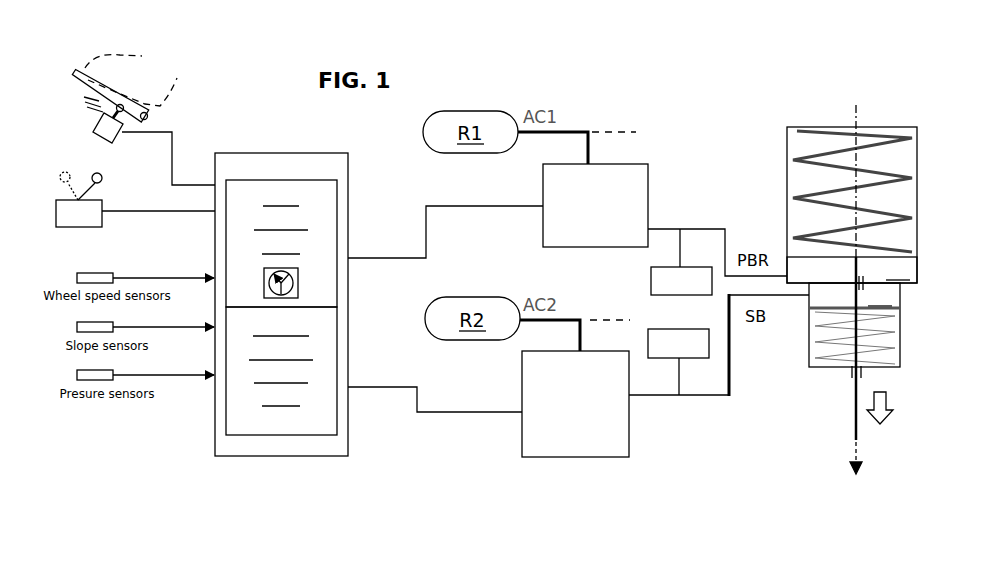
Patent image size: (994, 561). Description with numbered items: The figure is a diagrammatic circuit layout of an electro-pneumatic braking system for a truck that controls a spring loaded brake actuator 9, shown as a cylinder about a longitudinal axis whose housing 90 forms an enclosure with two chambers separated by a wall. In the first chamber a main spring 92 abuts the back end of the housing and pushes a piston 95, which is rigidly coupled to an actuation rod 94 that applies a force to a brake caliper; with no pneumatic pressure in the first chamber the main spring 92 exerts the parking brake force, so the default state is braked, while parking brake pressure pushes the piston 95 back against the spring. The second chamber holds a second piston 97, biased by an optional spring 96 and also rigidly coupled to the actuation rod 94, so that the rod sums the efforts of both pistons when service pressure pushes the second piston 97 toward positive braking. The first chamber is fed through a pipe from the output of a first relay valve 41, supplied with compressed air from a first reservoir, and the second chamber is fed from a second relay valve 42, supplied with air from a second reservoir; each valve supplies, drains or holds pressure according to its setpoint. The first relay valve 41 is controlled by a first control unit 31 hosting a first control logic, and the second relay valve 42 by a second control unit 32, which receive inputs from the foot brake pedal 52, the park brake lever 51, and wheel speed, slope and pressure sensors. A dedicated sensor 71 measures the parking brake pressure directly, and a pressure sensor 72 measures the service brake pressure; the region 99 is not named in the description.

The spring loaded brake actuator 9 is at (812, 124).
The first control unit 31 is at (337, 223).
The second control unit 32 is at (337, 360).
The first relay valve 41 is at (648, 196).
The second relay valve 42 is at (629, 436).
The lever 51 is at (50, 192).
The foot brake pedal 52 is at (70, 123).
The dedicated sensor 71 is at (651, 277).
The pressure sensor 72 is at (665, 329).
The housing 90 is at (787, 155).
The main spring 92 is at (843, 150).
The actuation rod 94 is at (856, 398).
The piston 95 is at (818, 257).
The spring 96 is at (840, 337).
The second piston 97 is at (890, 310).
The service brake chamber Ch2 99 is at (816, 283).